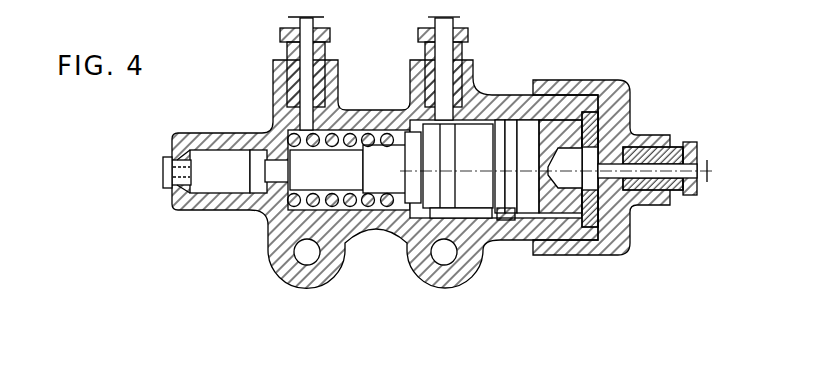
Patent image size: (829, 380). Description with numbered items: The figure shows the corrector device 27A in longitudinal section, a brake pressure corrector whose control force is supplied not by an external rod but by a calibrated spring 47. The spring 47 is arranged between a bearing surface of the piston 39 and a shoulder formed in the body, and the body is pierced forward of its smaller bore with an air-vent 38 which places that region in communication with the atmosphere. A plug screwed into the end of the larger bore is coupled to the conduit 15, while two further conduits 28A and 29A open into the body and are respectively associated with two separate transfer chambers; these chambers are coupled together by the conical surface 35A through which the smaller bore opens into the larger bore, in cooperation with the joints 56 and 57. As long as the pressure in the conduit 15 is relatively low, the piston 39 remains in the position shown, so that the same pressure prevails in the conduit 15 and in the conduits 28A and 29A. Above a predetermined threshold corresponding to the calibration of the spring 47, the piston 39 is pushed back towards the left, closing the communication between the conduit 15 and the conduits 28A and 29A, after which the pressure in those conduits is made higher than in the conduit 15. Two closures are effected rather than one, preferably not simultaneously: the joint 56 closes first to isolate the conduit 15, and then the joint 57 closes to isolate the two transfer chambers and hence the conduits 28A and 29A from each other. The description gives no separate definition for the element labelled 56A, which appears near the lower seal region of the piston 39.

The conduit 15 is at (688, 180).
The corrector device 27A is at (270, 128).
The conduit 28A is at (310, 51).
The conduit 29A is at (447, 37).
The conical surface 35A is at (413, 212).
The air-vent 38 is at (163, 171).
The piston 39 is at (551, 122).
The calibrated spring 47 is at (360, 206).
The joint 56 is at (513, 124).
The seal ring 56A is at (518, 214).
The joint 57 is at (433, 128).